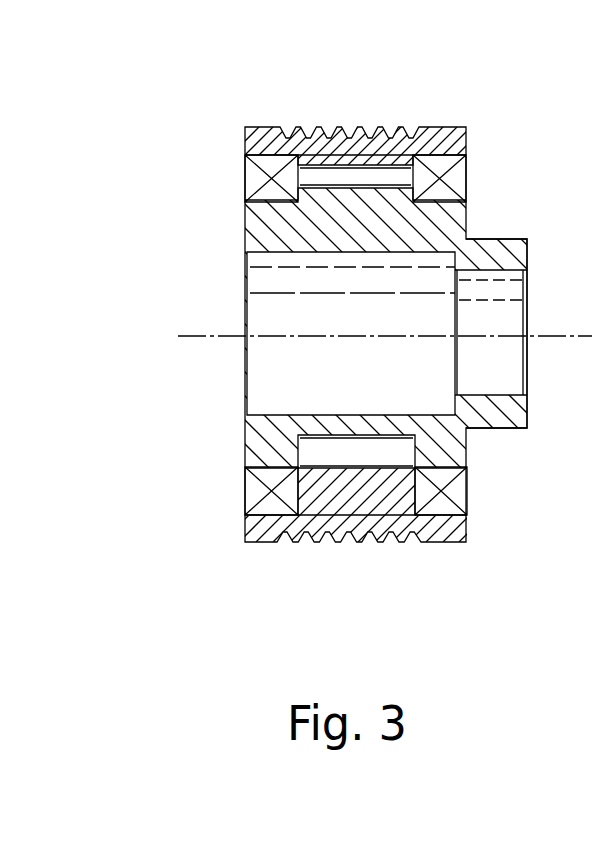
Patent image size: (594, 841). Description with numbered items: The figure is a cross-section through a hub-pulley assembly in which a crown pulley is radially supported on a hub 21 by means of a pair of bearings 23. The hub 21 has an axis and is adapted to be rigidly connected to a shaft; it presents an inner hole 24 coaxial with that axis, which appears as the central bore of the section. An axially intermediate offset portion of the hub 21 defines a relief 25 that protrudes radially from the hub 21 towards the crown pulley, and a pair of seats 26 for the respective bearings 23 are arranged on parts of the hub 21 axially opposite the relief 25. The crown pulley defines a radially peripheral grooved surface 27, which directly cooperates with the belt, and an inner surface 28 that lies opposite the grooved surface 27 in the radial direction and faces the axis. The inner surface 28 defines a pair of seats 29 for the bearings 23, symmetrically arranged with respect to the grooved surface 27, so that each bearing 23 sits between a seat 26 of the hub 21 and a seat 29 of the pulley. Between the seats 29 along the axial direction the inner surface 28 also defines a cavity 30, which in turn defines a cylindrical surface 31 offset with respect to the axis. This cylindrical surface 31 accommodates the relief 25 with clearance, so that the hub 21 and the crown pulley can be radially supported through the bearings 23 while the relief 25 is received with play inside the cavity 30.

The hub 21 is at (243, 228).
The bearings 23 is at (467, 200).
The inner hole 24 is at (315, 256).
The relief 25 is at (467, 237).
The seats 26 is at (262, 474).
The grooved surface 27 is at (362, 126).
The inner surface 28 is at (294, 468).
The seats 29 is at (265, 162).
The cavity 30 is at (378, 178).
The cylindrical surface 31 is at (352, 462).